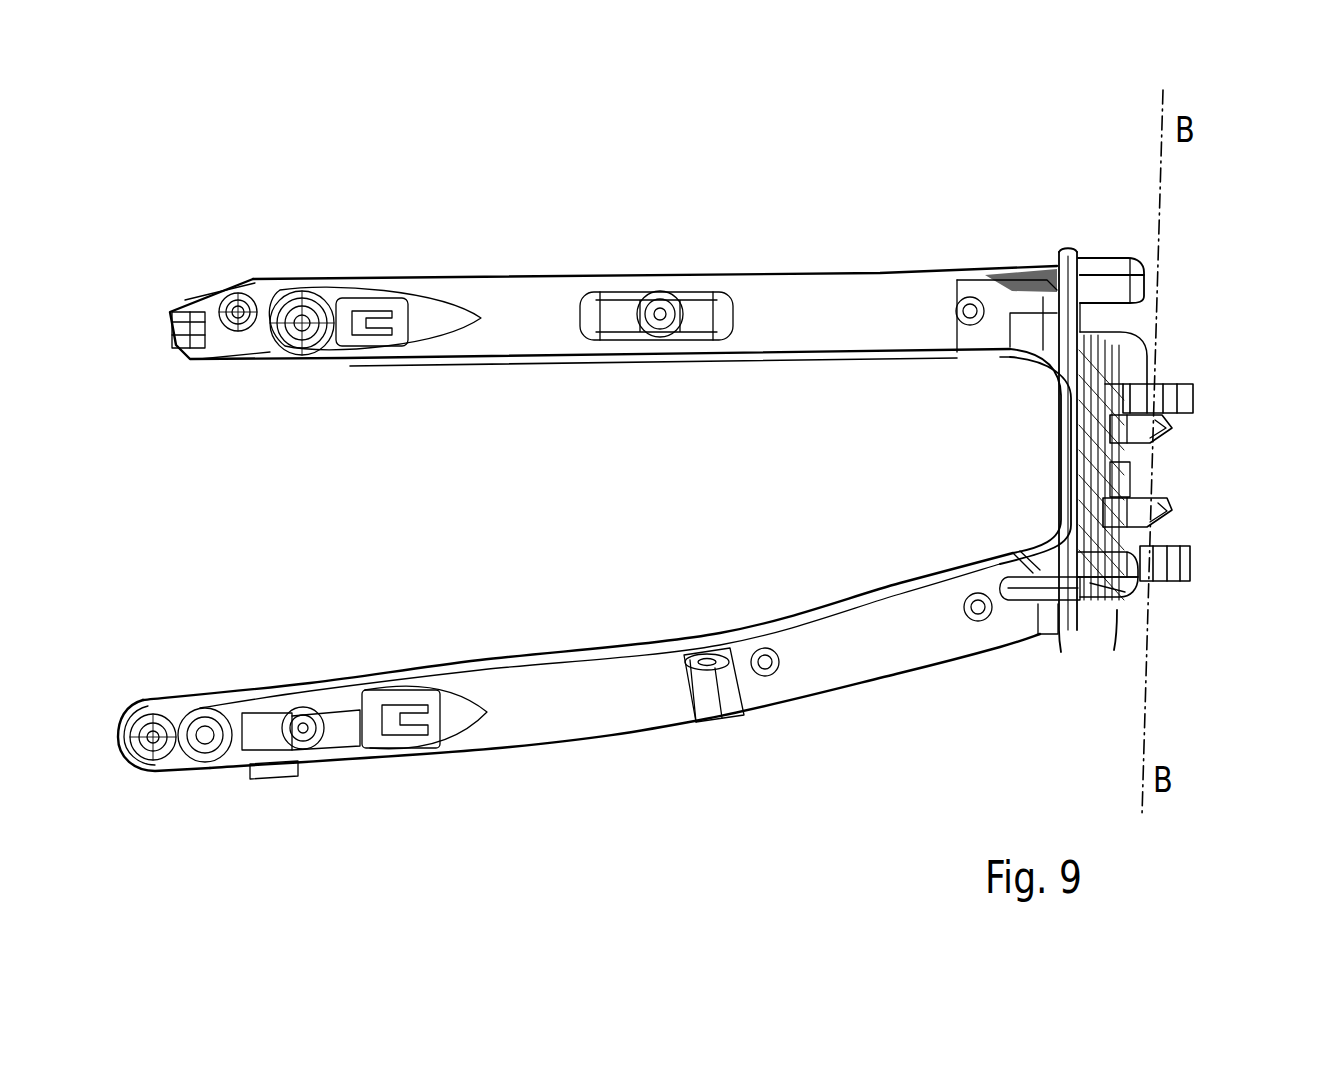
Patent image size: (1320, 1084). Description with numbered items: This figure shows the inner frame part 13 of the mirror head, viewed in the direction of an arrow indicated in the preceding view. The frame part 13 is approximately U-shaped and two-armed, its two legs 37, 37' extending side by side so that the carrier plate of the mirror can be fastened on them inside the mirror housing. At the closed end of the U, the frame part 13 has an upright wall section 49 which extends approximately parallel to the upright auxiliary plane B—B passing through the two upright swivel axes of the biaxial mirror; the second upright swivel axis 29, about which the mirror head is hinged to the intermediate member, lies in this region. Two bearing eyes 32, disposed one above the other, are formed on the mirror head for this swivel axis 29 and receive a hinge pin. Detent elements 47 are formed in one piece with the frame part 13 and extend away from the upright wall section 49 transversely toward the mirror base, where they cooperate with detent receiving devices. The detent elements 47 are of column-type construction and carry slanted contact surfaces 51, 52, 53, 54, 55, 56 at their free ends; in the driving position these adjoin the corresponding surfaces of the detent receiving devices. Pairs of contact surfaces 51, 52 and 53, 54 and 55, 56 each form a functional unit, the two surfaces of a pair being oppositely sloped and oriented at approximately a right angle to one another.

The frame part 13 is at (607, 800).
The second upright swivel axis 29 is at (1073, 457).
The bearing eyes 32 is at (1185, 384).
The leg 37 is at (613, 281).
The leg 37' is at (565, 670).
The detent elements 47 is at (1090, 198).
The upright wall section 49 is at (1132, 357).
The contact surface 51 is at (1166, 436).
The contact surface 52 is at (1168, 510).
The contact surface 53 is at (1148, 265).
The contact surface 54 is at (1150, 291).
The contact surface 55 is at (1126, 604).
The contact surface 56 is at (1146, 600).